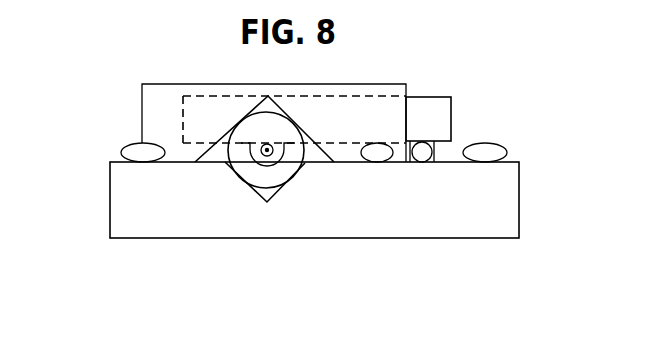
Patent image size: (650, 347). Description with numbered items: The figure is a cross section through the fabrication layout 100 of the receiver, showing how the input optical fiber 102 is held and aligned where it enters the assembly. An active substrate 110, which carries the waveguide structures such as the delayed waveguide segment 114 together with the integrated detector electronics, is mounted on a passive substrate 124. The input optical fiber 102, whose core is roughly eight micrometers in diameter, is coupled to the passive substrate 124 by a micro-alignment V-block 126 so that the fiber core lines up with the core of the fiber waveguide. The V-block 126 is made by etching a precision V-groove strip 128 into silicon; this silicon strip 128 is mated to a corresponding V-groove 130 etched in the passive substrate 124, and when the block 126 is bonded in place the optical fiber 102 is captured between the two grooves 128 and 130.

The fabrication layout 100 is at (110, 105).
The input optical fiber 102 is at (277, 175).
The active substrate 110 is at (438, 106).
The waveguide segment 114 is at (438, 152).
The passive substrate 124 is at (495, 210).
The micro-alignment V-block 126 is at (353, 107).
The V-groove strip 128 is at (211, 143).
The V-groove 130 is at (258, 197).